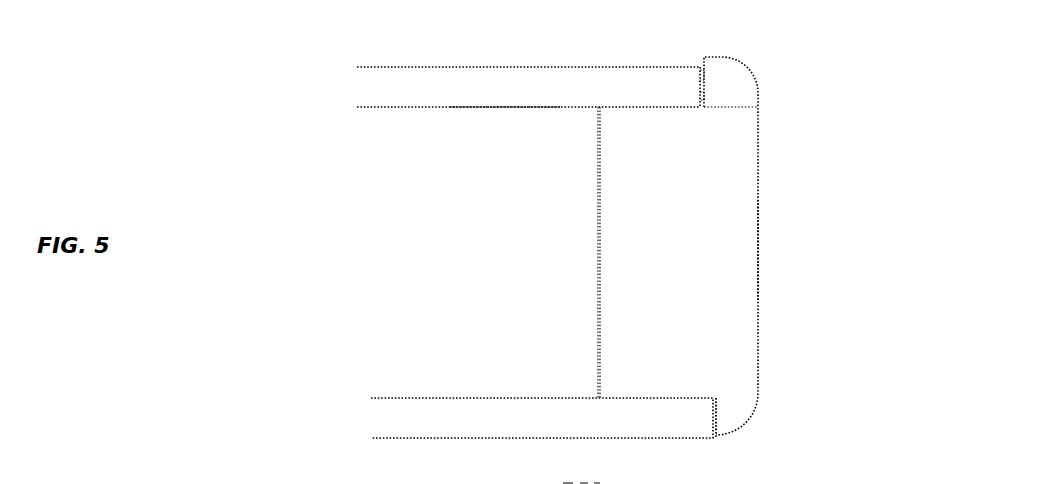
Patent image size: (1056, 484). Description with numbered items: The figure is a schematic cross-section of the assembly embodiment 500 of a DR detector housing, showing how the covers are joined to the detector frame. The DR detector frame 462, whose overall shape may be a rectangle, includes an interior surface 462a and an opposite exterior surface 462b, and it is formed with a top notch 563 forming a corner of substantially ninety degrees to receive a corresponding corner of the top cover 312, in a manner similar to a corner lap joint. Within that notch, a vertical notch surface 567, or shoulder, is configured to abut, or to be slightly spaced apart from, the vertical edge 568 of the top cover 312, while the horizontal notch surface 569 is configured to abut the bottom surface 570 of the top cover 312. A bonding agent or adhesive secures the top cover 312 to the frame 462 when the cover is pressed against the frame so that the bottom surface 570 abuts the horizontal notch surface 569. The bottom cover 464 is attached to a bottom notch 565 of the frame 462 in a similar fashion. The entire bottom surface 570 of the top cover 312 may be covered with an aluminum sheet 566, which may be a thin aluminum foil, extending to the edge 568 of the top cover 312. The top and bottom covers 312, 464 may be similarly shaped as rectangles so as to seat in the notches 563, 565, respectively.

The top cover 312 is at (363, 90).
The DR detector frame 462 is at (737, 188).
The interior surface 462a is at (594, 247).
The exterior surface 462b is at (758, 231).
The bottom cover 464 is at (383, 418).
The assembly embodiment 500 is at (934, 234).
The top notch 563 is at (716, 122).
The bottom notch 565 is at (728, 391).
The aluminum sheet 566 is at (513, 108).
The vertical notch surface 567 is at (695, 78).
The vertical edge 568 is at (708, 96).
The horizontal notch surface 569 is at (615, 100).
The bottom surface 570 is at (615, 118).